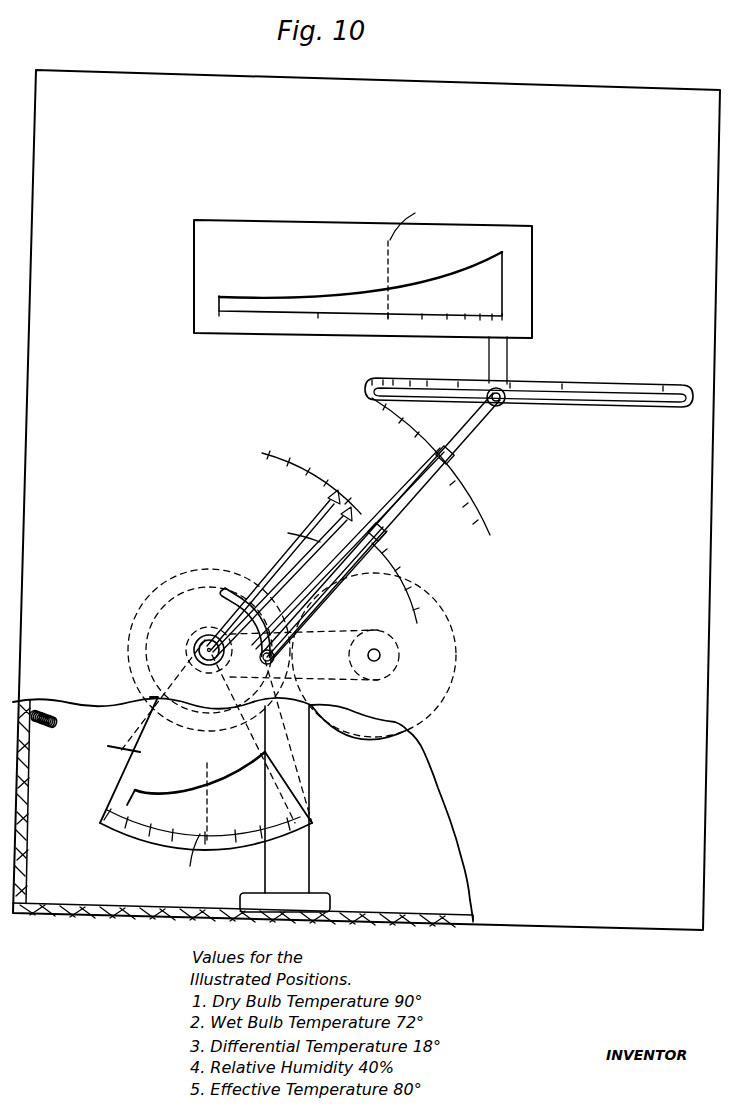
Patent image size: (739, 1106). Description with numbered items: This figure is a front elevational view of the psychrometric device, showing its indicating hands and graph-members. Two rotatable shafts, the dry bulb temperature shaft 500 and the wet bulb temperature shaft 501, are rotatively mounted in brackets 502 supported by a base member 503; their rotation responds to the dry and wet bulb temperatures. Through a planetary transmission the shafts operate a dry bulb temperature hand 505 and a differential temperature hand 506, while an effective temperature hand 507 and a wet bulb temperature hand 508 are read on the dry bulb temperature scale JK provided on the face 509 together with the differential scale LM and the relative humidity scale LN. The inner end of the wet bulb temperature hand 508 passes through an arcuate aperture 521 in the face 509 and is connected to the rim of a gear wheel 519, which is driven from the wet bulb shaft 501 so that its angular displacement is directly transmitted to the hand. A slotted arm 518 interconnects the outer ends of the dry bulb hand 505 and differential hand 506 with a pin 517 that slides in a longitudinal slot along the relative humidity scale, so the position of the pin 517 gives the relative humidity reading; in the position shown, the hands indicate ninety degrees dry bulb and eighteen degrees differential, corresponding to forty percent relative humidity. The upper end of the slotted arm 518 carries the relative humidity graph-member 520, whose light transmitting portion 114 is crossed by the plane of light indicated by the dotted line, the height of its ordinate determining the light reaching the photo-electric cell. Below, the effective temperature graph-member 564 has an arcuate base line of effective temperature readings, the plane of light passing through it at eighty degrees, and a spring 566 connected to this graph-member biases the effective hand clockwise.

The light transmitting portion 114 is at (482, 296).
The dry bulb temperature shaft 500 is at (197, 648).
The wet bulb temperature shaft 501 is at (380, 660).
The brackets 502 is at (311, 772).
The base member 503 is at (96, 906).
The dry bulb temperature hand 505 is at (353, 594).
The differential temperature hand 506 is at (390, 506).
The effective temperature hand 507 is at (270, 551).
The wet bulb temperature hand 508 is at (318, 516).
The face 509 is at (152, 449).
The pin 517 is at (503, 405).
The slotted arm 518 is at (460, 443).
The gear wheel 519 is at (140, 602).
The relative humidity graph-member 520 is at (363, 469).
The arcuate aperture 521 is at (228, 592).
The effective temperature graph-member 564 is at (180, 794).
The spring 566 is at (80, 744).